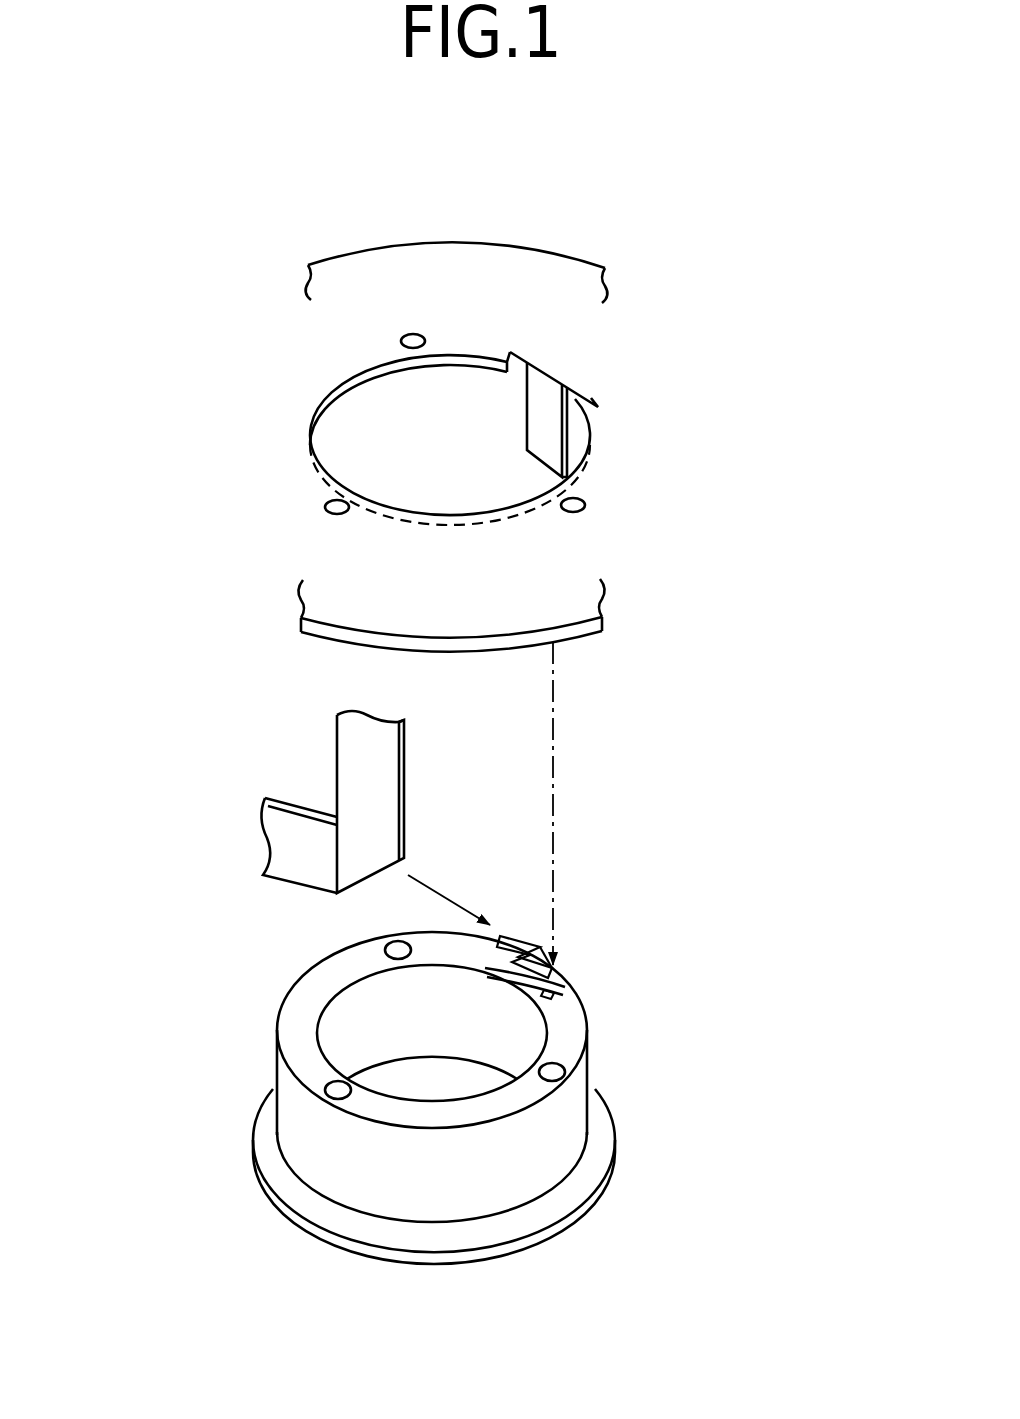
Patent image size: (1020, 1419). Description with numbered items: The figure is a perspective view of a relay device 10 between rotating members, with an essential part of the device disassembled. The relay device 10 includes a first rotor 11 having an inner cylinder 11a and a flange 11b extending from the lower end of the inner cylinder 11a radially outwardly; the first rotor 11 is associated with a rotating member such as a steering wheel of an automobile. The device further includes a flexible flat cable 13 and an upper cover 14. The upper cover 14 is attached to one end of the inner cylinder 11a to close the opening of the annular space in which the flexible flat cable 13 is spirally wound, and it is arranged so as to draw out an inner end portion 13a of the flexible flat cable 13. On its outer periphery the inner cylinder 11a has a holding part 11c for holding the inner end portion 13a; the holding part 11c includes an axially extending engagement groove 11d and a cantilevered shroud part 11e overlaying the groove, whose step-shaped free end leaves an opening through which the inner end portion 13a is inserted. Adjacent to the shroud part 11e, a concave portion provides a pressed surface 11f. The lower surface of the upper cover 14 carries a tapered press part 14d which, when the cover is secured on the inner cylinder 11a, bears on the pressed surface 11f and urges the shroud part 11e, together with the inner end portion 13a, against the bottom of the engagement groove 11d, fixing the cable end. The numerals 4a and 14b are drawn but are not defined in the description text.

The relay device 10 is at (662, 387).
The upper cover 14 is at (545, 252).
The opening of plate 4a is at (343, 485).
The bent tab of plate 14b is at (520, 363).
The press part 14d is at (590, 457).
The flexible flat cable 13 is at (247, 828).
The inner end portion 13a is at (297, 803).
The first rotor 11 is at (608, 1205).
The inner cylinder 11a is at (293, 1102).
The flange 11b is at (262, 1148).
The holding part 11c is at (648, 943).
The engagement groove 11d is at (560, 990).
The shroud part 11e is at (527, 968).
The pressed surface 11f is at (548, 962).